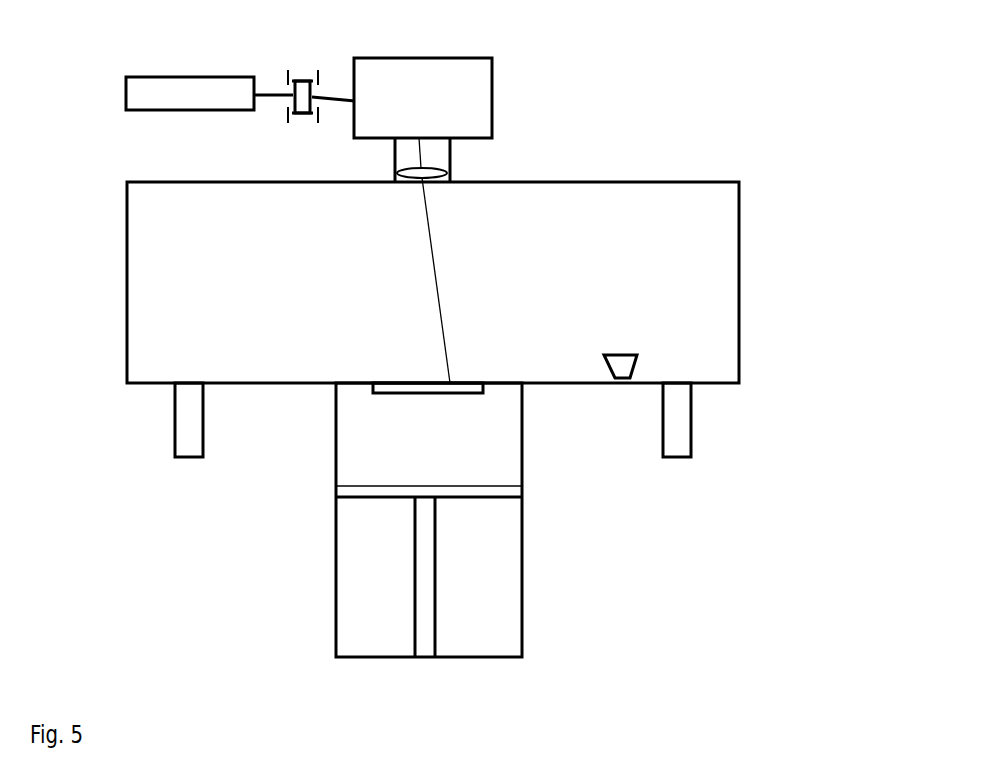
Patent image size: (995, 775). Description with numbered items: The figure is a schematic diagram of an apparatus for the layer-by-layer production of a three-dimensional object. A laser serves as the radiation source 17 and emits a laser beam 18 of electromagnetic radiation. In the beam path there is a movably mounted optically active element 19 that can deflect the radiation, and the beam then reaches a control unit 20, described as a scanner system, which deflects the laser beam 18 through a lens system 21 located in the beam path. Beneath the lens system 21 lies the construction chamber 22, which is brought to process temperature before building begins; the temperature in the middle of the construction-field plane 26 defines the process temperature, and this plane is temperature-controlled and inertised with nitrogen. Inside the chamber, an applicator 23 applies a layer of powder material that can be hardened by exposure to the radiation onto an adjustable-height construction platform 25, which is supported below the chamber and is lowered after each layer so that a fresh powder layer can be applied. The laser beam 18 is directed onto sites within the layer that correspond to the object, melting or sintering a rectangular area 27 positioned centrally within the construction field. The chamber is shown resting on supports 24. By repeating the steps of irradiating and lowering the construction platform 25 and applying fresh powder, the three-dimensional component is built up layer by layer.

The radiation source 17 is at (150, 93).
The laser beam 18 is at (272, 95).
The optically active element 19 is at (303, 92).
The control unit 20 is at (415, 85).
The lens system 21 is at (450, 173).
The construction chamber 22 is at (739, 261).
The applicator 23 is at (622, 369).
The support leg 24 is at (686, 425).
The construction platform 25 is at (513, 491).
The construction-field plane 26 is at (450, 383).
The rectangular area 27 is at (437, 396).